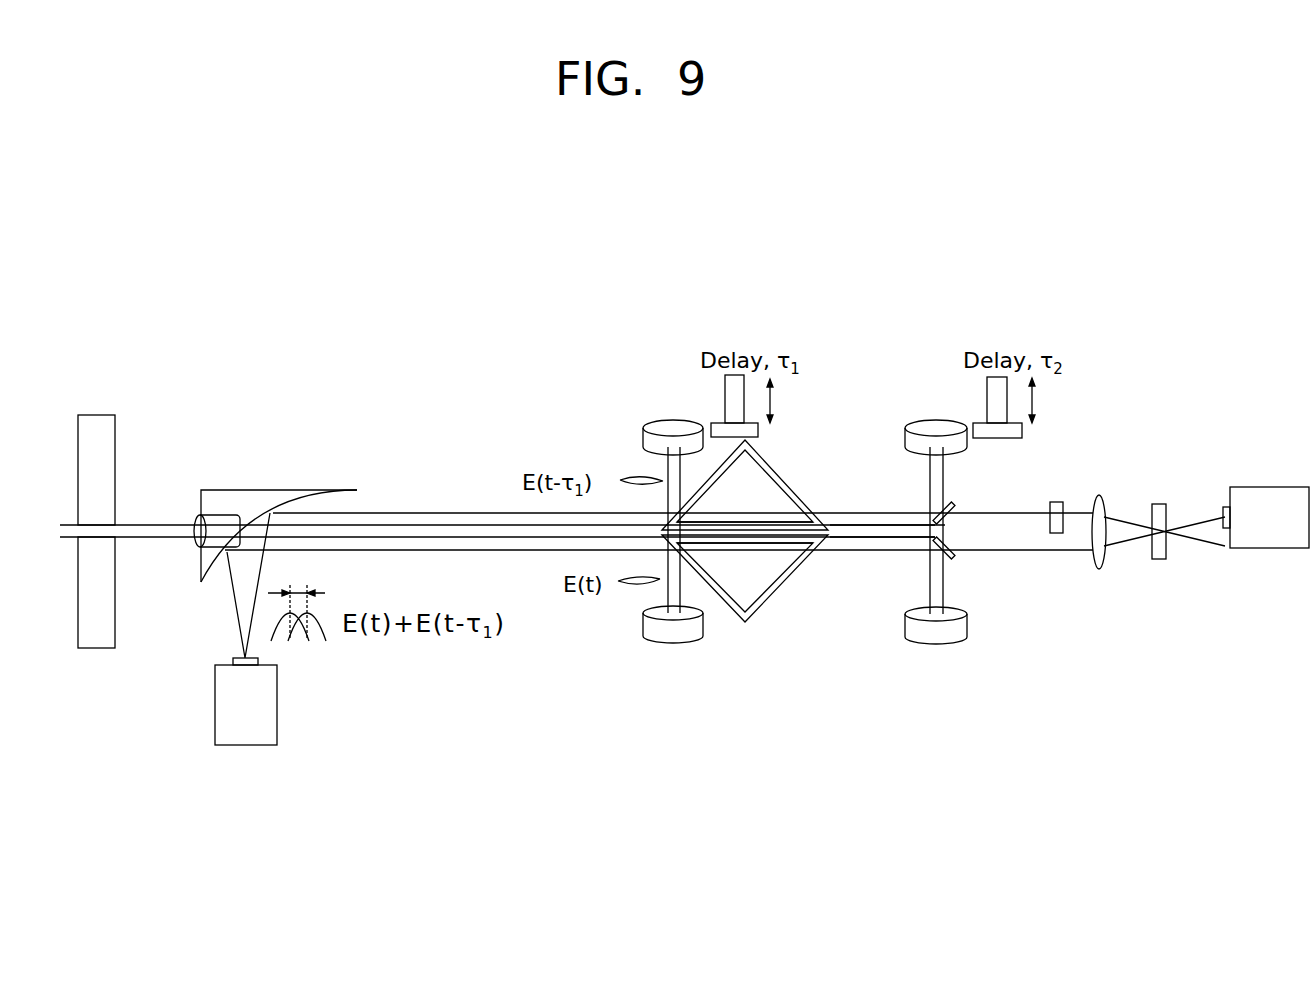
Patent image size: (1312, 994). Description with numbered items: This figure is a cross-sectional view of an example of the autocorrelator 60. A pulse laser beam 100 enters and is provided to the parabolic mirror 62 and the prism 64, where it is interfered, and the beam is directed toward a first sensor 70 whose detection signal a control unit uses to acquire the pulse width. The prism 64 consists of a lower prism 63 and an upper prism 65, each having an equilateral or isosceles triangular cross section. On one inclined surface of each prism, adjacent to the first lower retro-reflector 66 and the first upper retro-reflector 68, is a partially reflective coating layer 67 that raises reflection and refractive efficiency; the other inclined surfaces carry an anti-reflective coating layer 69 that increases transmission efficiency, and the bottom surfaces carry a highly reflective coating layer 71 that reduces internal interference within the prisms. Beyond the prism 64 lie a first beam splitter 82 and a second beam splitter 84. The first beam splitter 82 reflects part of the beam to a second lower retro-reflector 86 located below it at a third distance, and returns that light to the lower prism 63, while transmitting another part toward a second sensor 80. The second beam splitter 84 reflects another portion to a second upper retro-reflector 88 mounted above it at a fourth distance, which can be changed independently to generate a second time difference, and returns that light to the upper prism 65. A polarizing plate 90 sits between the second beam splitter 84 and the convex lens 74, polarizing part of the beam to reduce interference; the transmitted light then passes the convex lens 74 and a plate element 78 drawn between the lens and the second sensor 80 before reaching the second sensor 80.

The autocorrelator 60 is at (708, 310).
The parabolic mirror 62 is at (255, 490).
The lower prism 63 is at (728, 573).
The prism 64 is at (745, 598).
The upper prism 65 is at (748, 515).
The first lower retro-reflector 66 is at (673, 643).
The partially reflective coating layer 67 is at (667, 500).
The first upper retro-reflector 68 is at (673, 420).
The anti-reflective coating layer 69 is at (810, 500).
The first sensor 70 is at (245, 745).
The highly reflective coating layer 71 is at (777, 523).
The convex lens 74 is at (1099, 495).
The filter 78 is at (1159, 504).
The second sensor 80 is at (1270, 487).
The first beam splitter 82 is at (957, 552).
The second beam splitter 84 is at (955, 503).
The second lower retro-reflector 86 is at (936, 643).
The second upper retro-reflector 88 is at (936, 420).
The polarizing plate 90 is at (1057, 502).
The pulse laser beam 100 is at (155, 525).